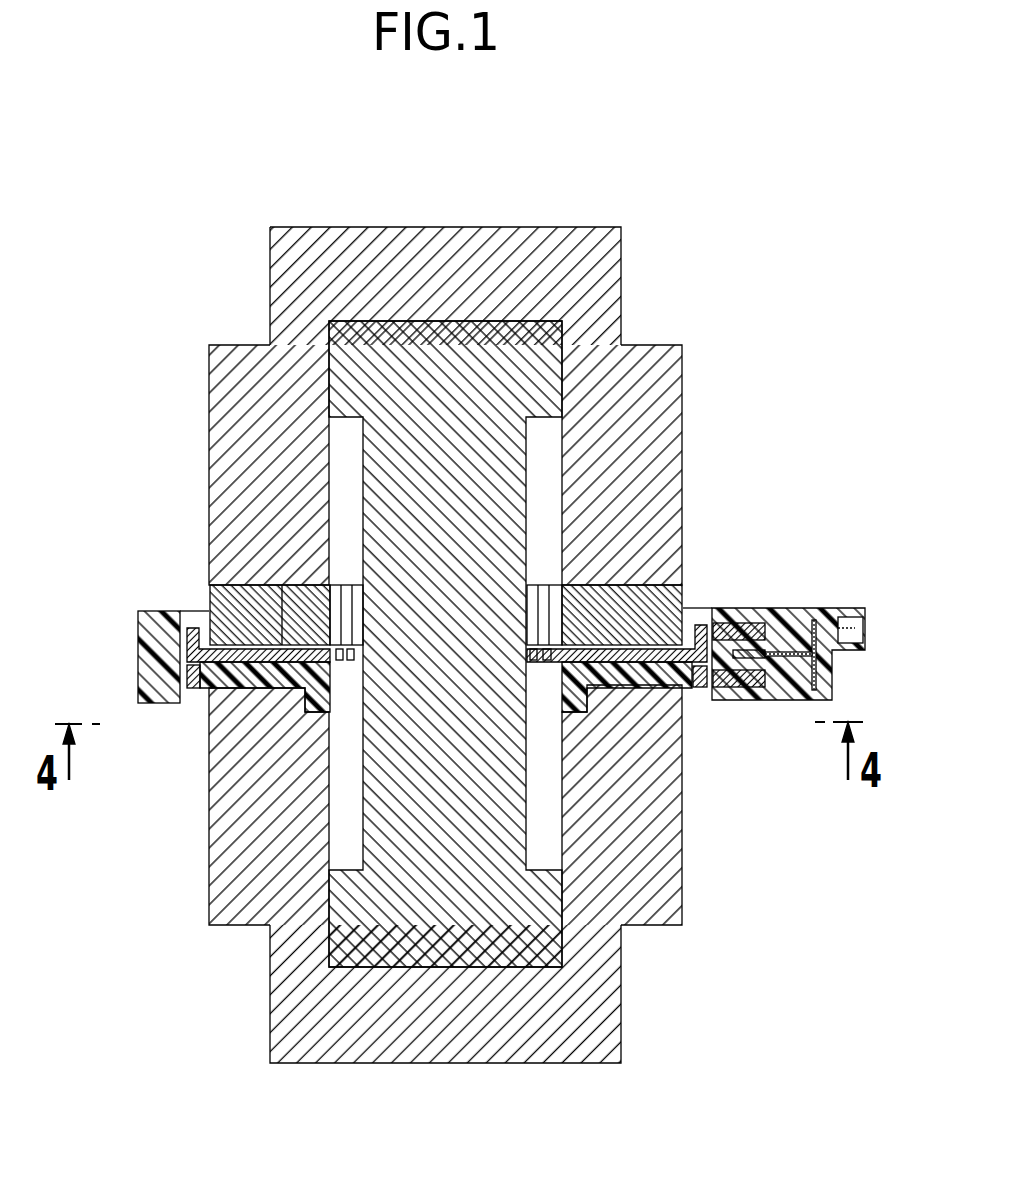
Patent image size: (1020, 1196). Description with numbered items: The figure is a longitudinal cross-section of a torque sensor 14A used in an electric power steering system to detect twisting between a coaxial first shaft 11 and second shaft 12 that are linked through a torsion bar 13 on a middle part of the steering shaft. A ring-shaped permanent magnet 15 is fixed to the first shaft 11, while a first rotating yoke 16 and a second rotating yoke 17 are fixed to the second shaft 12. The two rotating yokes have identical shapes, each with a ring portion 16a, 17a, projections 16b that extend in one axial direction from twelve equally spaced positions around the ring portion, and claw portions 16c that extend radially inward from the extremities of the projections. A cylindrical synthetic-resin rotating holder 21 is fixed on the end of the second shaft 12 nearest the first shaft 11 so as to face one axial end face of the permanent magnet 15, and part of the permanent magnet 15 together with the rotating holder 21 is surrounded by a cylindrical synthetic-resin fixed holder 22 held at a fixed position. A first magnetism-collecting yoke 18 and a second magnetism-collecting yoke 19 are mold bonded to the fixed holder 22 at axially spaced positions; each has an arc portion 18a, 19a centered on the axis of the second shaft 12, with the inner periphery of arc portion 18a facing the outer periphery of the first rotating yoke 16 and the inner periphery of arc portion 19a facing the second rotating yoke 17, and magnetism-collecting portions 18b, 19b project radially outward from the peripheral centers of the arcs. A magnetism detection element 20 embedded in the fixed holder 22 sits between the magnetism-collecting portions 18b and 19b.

The first shaft 11 is at (535, 232).
The second shaft 12 is at (484, 1048).
The torsion bar 13 is at (512, 834).
The torque sensor 14A is at (208, 356).
The permanent magnet 15 is at (628, 587).
The first rotating yoke 16 is at (192, 621).
The ring portion 16a is at (203, 610).
The projections 16b is at (186, 632).
The claw portions 16c is at (335, 600).
The second rotating yoke 17 is at (194, 689).
The ring portion 17a is at (140, 681).
The first magnetism-collecting yoke 18 is at (742, 612).
The arc portion 18a is at (720, 610).
The magnetism-collecting portion 18b is at (768, 615).
The second magnetism-collecting yoke 19 is at (742, 700).
The arc portion 19a is at (715, 700).
The magnetism-collecting portion 19b is at (767, 700).
The magnetism detection element 20 is at (788, 615).
The rotating holder 21 is at (275, 684).
The fixed holder 22 is at (143, 650).